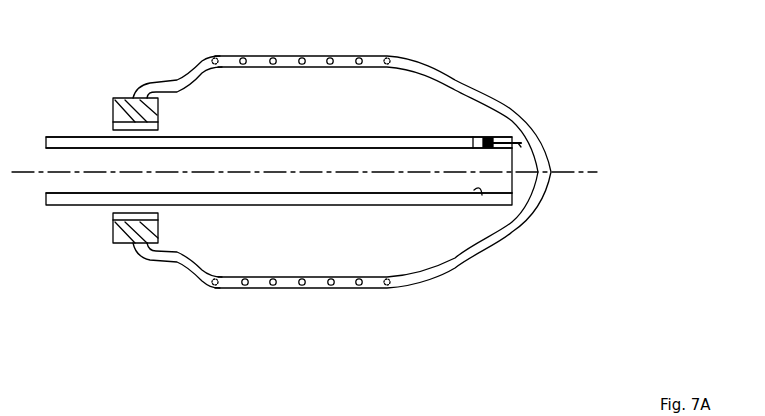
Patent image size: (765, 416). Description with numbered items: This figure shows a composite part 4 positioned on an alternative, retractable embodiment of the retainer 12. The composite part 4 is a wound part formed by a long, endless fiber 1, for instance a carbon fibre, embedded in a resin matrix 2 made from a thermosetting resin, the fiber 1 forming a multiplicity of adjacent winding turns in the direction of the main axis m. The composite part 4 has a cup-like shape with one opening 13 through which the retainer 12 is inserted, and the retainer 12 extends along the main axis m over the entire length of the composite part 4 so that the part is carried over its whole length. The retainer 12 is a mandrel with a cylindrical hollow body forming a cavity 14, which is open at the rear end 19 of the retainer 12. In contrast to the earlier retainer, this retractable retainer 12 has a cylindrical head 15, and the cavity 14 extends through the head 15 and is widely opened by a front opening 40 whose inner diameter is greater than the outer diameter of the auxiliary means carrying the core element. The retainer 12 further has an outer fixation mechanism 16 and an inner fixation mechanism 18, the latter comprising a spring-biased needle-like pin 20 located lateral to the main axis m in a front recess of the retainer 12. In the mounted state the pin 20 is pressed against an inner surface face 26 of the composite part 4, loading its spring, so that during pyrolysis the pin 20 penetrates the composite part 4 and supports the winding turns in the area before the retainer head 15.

The long fiber 1 is at (363, 61).
The resin matrix 2 is at (462, 78).
The composite part 4 is at (435, 49).
The retainer 12 is at (249, 128).
The opening 13 is at (133, 106).
The cavity 14 is at (332, 162).
The head 15 is at (440, 200).
The outer fixation mechanism 16 is at (124, 254).
The inner fixation mechanism 18 is at (501, 120).
The rear end 19 is at (95, 135).
The needle-like pin 20 is at (500, 136).
The inner surface face 26 is at (517, 148).
The front opening 40 is at (482, 195).
The main axis m is at (587, 172).